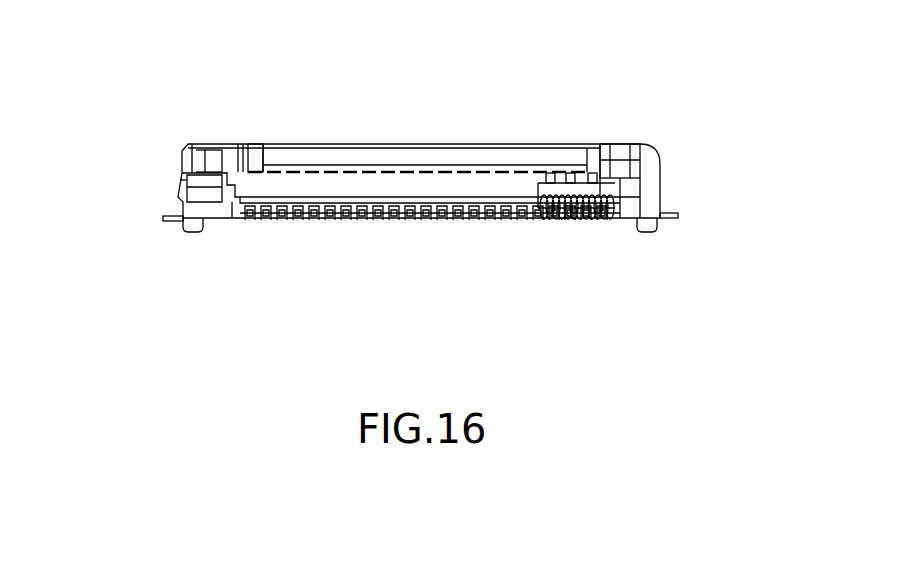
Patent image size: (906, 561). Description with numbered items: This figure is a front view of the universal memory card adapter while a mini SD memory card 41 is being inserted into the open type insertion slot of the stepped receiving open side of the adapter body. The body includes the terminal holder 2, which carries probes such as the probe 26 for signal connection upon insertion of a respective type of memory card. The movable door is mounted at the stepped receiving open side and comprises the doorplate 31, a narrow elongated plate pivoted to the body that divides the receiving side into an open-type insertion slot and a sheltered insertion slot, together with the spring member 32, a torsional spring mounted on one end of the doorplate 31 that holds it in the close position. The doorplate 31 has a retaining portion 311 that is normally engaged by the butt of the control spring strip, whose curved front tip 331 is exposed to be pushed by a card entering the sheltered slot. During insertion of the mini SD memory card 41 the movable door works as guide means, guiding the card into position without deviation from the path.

The terminal holder 2 is at (650, 188).
The probe 26 is at (625, 146).
The doorplate 31 is at (392, 183).
The spring member 32 is at (579, 150).
The mini SD memory card 41 is at (325, 146).
The retaining portion 311 is at (220, 146).
The curved front tip 331 is at (188, 181).